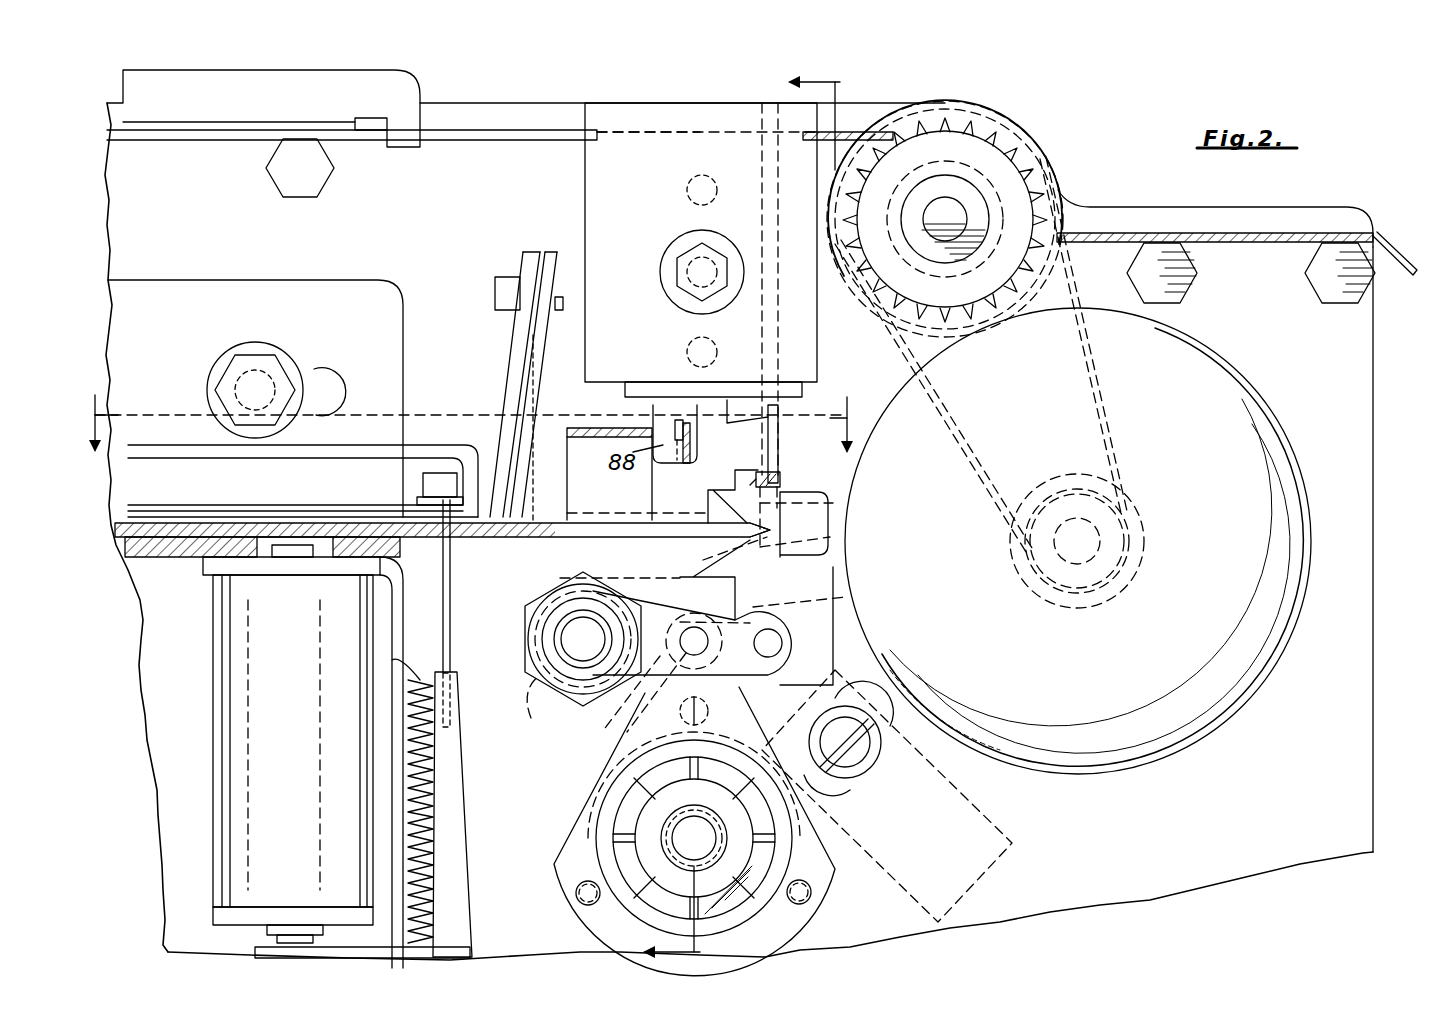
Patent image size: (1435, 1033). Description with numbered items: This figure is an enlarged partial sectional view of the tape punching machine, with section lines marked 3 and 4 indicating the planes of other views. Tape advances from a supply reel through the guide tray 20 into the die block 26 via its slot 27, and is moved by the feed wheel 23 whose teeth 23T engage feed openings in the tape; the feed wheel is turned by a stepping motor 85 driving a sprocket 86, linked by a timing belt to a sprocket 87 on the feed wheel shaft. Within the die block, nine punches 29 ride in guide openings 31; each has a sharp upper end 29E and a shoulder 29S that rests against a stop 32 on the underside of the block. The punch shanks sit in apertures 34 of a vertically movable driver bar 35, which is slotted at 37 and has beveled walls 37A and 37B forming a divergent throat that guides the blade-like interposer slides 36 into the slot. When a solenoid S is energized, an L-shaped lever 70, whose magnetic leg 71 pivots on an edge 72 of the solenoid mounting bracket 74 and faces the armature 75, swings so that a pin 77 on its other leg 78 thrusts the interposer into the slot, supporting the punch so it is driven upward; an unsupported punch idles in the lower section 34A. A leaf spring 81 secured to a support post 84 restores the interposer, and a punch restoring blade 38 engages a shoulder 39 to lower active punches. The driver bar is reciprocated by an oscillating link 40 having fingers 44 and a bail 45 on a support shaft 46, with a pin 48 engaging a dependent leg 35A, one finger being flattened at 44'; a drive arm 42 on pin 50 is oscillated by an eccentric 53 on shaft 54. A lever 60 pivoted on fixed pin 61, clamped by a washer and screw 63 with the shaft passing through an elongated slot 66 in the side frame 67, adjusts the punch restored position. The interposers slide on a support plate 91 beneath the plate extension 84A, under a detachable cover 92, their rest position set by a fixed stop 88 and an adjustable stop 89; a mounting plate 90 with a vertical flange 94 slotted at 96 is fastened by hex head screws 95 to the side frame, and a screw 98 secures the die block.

The guide tray 20 is at (410, 93).
The feed wheel 23 is at (1037, 177).
The teeth 23T is at (1015, 148).
The die block 26 is at (590, 192).
The slot 27 is at (653, 140).
The punches 29 is at (780, 435).
The sharp upper end 29E is at (757, 140).
The shoulder 29S is at (762, 440).
The guide openings 31 is at (767, 303).
The stop 32 is at (728, 420).
The apertures 34 is at (833, 503).
The lower section 34A is at (833, 535).
The driver bar 35 is at (830, 548).
The dependent legs 35A is at (802, 645).
The interposer slides 36 is at (627, 513).
The slot 37 is at (757, 540).
The beveled wall 37A is at (723, 555).
The beveled wall 37B is at (713, 490).
The punch restoring blade 38 is at (778, 464).
The shoulder 39 is at (780, 483).
The oscillating link 40 is at (596, 712).
The drive arm 42 is at (641, 745).
The fingers 44 is at (692, 612).
The flattened portion 44' is at (827, 594).
The bail 45 is at (614, 695).
The support shaft 46 is at (569, 634).
The fixed pin 48 is at (768, 657).
The pin 50 is at (692, 655).
The eccentric 53 is at (688, 845).
The shaft 54 is at (641, 850).
The lever 60 is at (1000, 827).
The fixed pin 61 is at (648, 695).
The washer and screw 63 is at (860, 760).
The elongated slot 66 is at (540, 675).
The side frame 67 is at (1208, 873).
The lever 70 is at (475, 827).
The leg 71 is at (253, 947).
The edge 72 is at (437, 933).
The solenoid mounting bracket 74 is at (403, 628).
The core or armature 75 is at (297, 933).
The pin 77 is at (453, 627).
The leg 78 is at (474, 892).
The leaf spring 81 is at (510, 540).
The support post 84 is at (534, 248).
The plate extension 84A is at (240, 503).
The stepping motor 85 is at (1225, 708).
The sprocket 86 is at (1098, 587).
The sprocket 87 is at (983, 322).
The fixed stop 88 is at (1102, 420).
The adjustable stop 89 is at (597, 420).
The mounting plate 90 is at (170, 560).
The support plate 91 is at (118, 540).
The detachable cover 92 is at (350, 458).
The vertical flange 94 is at (375, 290).
The hex head screws 95 is at (248, 390).
The slot 96 is at (323, 377).
The screw 98 is at (690, 255).
The solenoids S is at (228, 756).
The section line 3- 3 is at (474, 410).
The section line 4- 4 is at (757, 521).